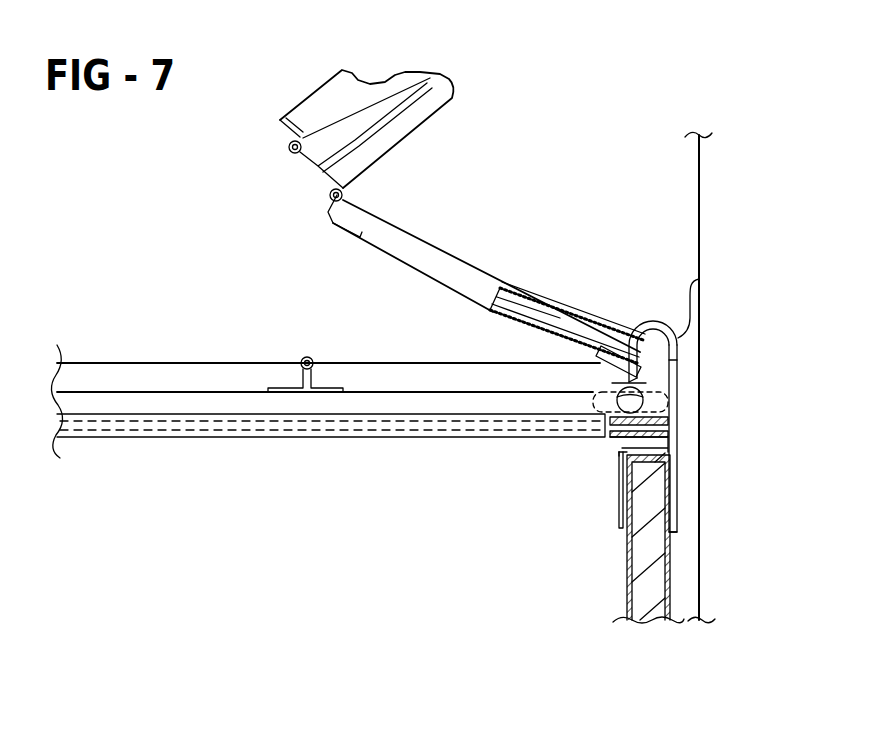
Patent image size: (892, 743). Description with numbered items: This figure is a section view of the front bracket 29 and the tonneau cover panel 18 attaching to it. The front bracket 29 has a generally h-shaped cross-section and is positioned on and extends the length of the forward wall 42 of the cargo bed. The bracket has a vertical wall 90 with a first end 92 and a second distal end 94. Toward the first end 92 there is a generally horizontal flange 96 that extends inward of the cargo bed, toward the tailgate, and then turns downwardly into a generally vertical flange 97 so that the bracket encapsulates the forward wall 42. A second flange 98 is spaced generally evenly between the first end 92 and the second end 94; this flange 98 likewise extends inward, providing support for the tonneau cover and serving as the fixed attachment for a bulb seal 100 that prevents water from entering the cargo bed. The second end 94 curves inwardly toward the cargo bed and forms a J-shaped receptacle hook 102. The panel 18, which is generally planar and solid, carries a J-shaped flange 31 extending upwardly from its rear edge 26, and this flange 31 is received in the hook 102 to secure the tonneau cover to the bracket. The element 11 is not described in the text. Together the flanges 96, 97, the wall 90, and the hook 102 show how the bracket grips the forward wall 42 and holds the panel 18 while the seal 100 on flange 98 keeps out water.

The panel 18 is at (446, 253).
The clip strip 11 is at (607, 343).
The J-shaped receptacle hook 102 is at (645, 323).
The J-shaped flange 31 is at (664, 323).
The second distal end 94 is at (699, 280).
The rear edge 26 is at (680, 368).
The bulb seal 100 is at (592, 398).
The front bracket 29 is at (680, 402).
The second flange 98 is at (680, 428).
The vertical wall 90 is at (680, 482).
The horizontal flange 96 is at (620, 450).
The vertical flange 97 is at (617, 520).
The first end 92 is at (678, 512).
The forward wall 42 is at (675, 567).